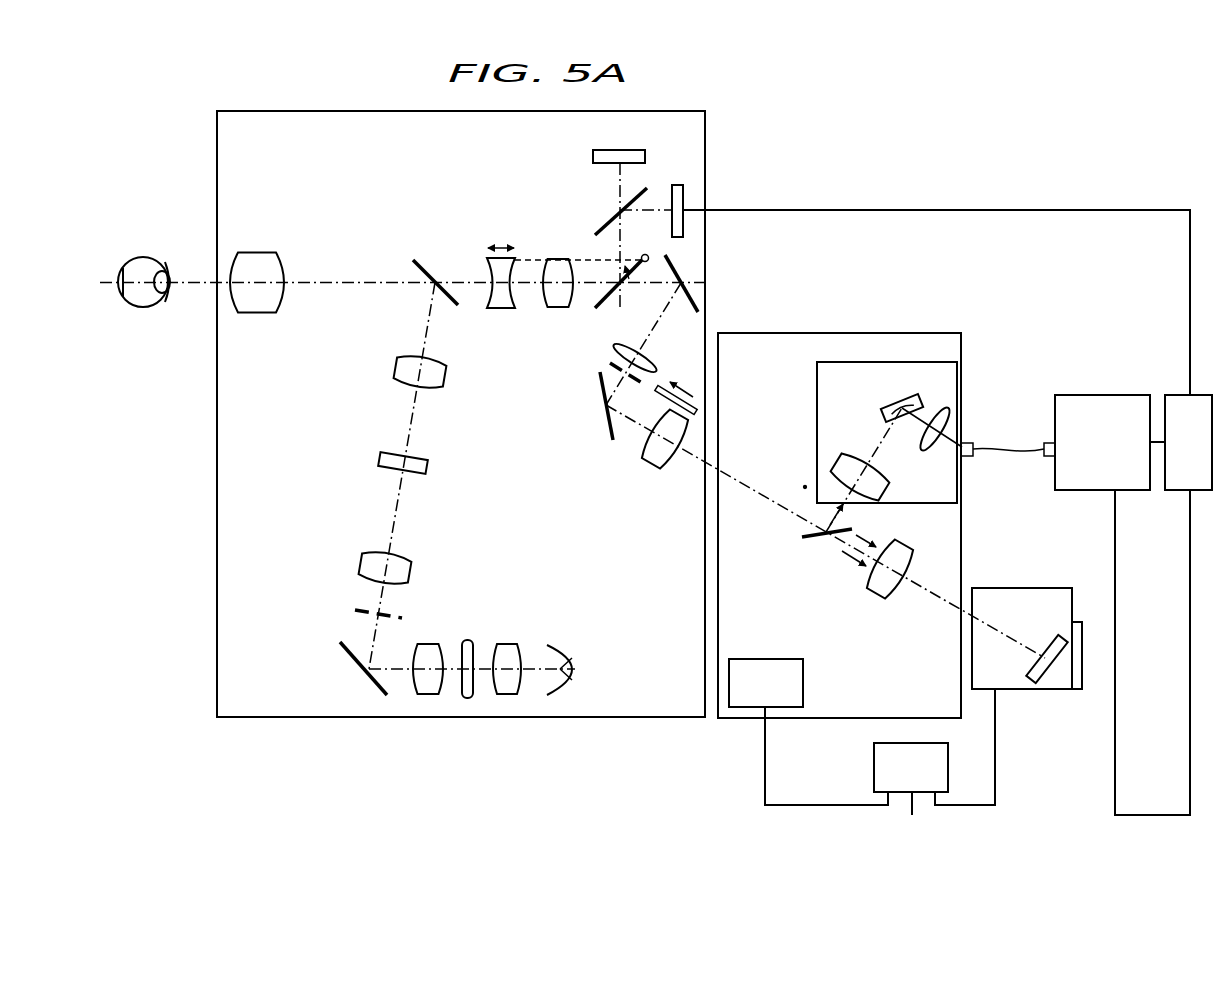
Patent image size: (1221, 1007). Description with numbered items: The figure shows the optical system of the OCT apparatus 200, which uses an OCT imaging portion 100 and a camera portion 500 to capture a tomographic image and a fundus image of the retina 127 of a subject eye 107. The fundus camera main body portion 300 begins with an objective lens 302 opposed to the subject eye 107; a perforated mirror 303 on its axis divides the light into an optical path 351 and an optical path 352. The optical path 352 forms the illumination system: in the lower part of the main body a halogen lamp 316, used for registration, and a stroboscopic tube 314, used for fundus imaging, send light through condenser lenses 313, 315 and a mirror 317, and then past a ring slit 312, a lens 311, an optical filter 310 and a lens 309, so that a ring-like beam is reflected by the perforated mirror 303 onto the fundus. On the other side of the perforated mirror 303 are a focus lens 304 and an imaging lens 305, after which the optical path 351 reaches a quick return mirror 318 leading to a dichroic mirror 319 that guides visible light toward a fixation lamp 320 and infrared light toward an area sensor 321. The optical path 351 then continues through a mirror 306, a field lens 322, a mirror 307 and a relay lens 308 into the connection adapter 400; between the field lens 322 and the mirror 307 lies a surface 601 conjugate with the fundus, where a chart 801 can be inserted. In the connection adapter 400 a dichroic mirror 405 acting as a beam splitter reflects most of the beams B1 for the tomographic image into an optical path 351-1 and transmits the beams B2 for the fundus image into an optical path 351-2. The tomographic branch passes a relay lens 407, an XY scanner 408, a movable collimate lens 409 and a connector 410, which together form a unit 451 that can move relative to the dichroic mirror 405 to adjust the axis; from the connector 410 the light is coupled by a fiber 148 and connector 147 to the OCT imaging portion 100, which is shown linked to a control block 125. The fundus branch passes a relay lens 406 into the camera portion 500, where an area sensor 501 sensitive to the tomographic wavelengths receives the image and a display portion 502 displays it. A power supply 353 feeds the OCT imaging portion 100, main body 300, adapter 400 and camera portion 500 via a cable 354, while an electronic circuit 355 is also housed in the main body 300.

The OCT apparatus 200 is at (142, 143).
The fundus camera main body portion 300 is at (217, 203).
The subject eye 107 is at (150, 308).
The retina 127 is at (125, 302).
The objective lens 302 is at (260, 314).
The perforated mirror 303 is at (414, 266).
The optical path 351 is at (470, 276).
The optical path 352 is at (428, 322).
The focus lens 304 is at (500, 309).
The imaging lens 305 is at (556, 261).
The fixation lamp 320 is at (593, 157).
The dichroic mirror 319 is at (598, 227).
The area sensor 321 is at (678, 185).
The quick return mirror 318 is at (612, 297).
The field lens 322 is at (613, 352).
The mirror 306 is at (690, 312).
The surface conjugate with the fundus 601 is at (608, 364).
The mirror 307 is at (599, 428).
The relay lens 308 is at (650, 465).
The chart 801 is at (700, 406).
The connection adapter 400 is at (750, 333).
The unit 451 is at (908, 362).
The XY scanner 408 is at (896, 400).
The collimate lens 409 is at (945, 415).
The connector 410 is at (967, 457).
The optical fiber 148 is at (1018, 447).
The fiber connector 147 is at (1048, 457).
The OCT imaging portion 100 is at (1102, 442).
The control unit 125 is at (1188, 442).
The optical path for imaging the tomographic image 351-1 is at (880, 452).
The relay lens 407 is at (888, 480).
The dichroic mirror 405 is at (818, 543).
The beams for imaging the tomographic image B1 is at (812, 524).
The beams for imaging the fundus image B2 is at (846, 570).
The relay lens 406 is at (904, 552).
The optical path for imaging the fundus image 351-2 is at (916, 598).
The camera portion 500 is at (1000, 588).
The area sensor 501 is at (1058, 640).
The display portion 502 is at (1077, 692).
The electronic circuit 355 is at (766, 683).
The power supply 353 is at (911, 767).
The cable 354 is at (848, 808).
The lens 309 is at (395, 372).
The optical filter 310 is at (380, 462).
The lens 311 is at (360, 562).
The ring slit 312 is at (354, 610).
The mirror 317 is at (366, 683).
The condenser lens 313 is at (430, 644).
The stroboscopic tube 314 is at (468, 640).
The condenser lens 315 is at (508, 645).
The halogen lamp 316 is at (556, 645).